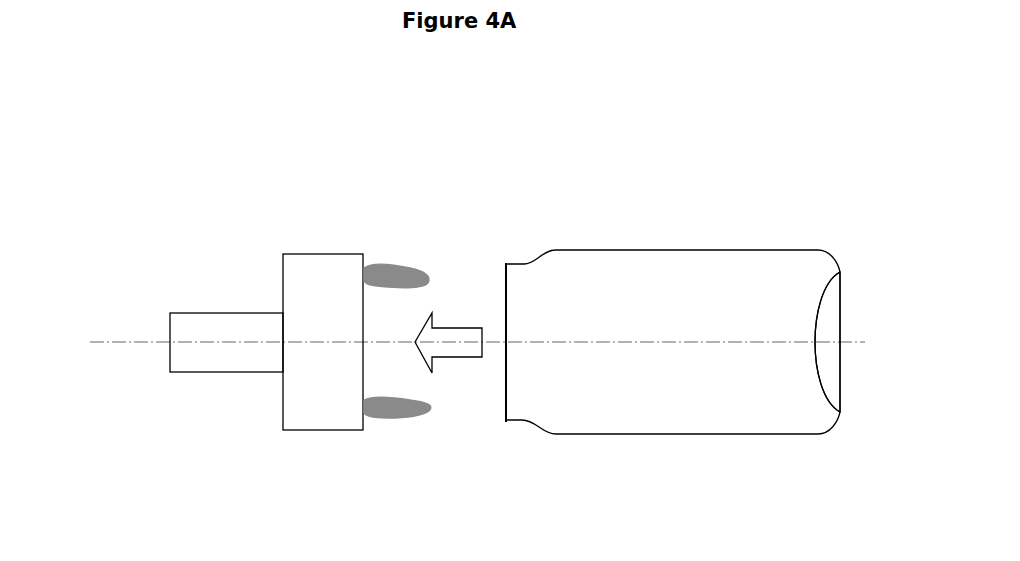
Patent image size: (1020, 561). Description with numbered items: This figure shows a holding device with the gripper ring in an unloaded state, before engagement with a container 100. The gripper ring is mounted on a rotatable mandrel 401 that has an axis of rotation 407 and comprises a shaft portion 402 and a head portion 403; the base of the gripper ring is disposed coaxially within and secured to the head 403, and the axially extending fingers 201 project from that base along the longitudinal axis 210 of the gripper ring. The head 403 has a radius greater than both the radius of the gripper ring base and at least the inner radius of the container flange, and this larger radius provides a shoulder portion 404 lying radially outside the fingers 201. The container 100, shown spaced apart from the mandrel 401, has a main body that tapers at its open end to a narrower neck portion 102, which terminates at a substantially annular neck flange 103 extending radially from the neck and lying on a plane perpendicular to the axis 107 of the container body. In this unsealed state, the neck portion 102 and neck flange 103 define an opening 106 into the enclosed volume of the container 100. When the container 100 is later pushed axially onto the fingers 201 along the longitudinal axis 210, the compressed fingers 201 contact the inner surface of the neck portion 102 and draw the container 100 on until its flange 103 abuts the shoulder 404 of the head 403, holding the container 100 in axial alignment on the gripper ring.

The container 100 is at (662, 339).
The neck portion 102 is at (531, 256).
The neck flange 103 is at (507, 426).
The opening 106 is at (503, 281).
The axis 107 is at (856, 340).
The axially extending fingers 201 is at (398, 268).
The longitudinal axis 210 is at (392, 338).
The rotatable mandrel 401 is at (285, 327).
The shaft portion 402 is at (205, 360).
The head portion 403 is at (331, 268).
The shoulder portion 404 is at (370, 430).
The axis of rotation 407 is at (102, 338).